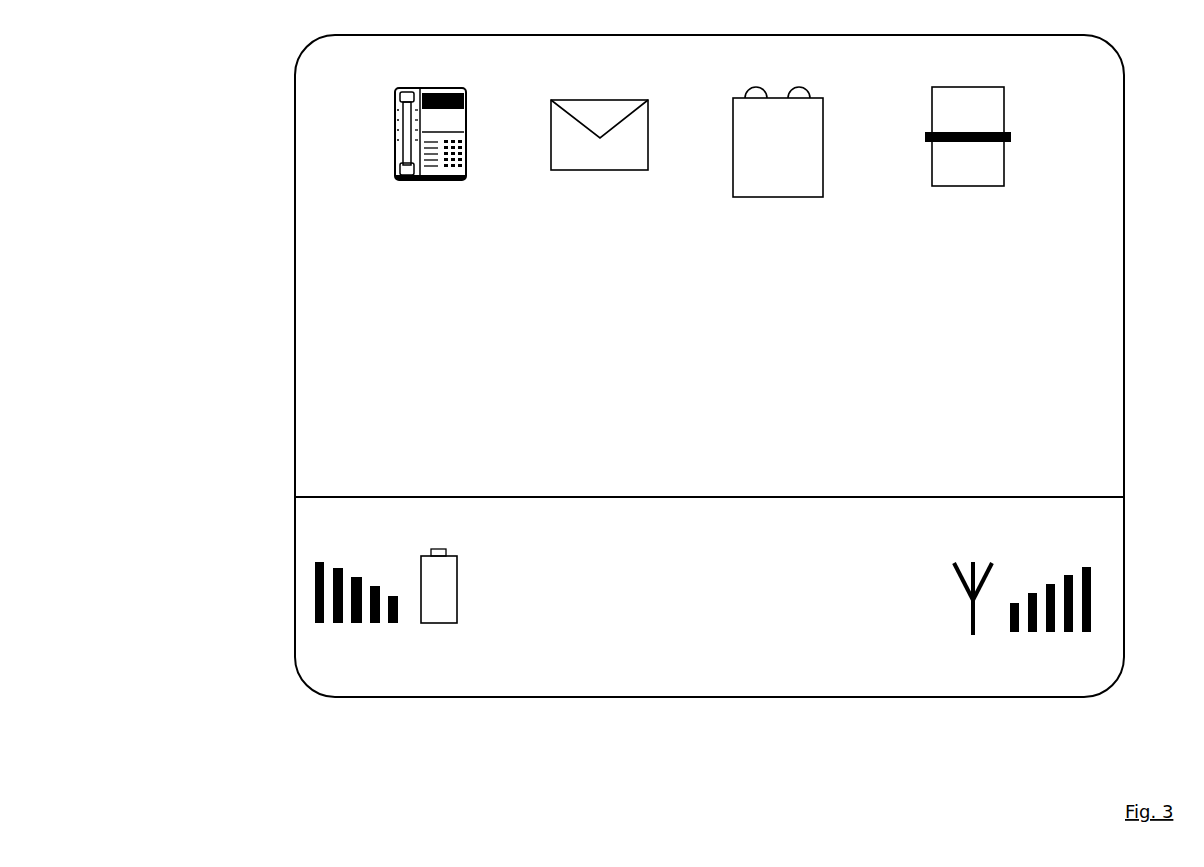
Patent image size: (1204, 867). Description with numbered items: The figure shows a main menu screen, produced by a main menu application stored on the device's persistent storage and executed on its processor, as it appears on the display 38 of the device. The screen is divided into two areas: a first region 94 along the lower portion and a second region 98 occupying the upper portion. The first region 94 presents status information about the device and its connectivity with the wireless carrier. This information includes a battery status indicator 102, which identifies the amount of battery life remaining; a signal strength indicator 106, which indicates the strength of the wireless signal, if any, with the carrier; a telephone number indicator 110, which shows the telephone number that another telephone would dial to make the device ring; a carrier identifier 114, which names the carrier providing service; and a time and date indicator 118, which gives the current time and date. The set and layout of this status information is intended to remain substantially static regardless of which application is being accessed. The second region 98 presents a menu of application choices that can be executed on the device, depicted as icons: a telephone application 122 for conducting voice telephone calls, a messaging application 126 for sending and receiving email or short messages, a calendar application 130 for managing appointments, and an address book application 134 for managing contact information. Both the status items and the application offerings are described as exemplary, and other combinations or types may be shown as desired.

The display 38 is at (268, 759).
The first region 94 is at (293, 654).
The second region 98 is at (628, 243).
The battery status indicator 102 is at (388, 630).
The signal strength indicator 106 is at (1026, 637).
The telephone number indicator 110 is at (572, 690).
The carrier identifier 114 is at (582, 623).
The time and date indicator 118 is at (658, 525).
The telephone application 122 is at (398, 180).
The messaging application 126 is at (557, 173).
The calendar application 130 is at (745, 202).
The address book application 134 is at (940, 193).